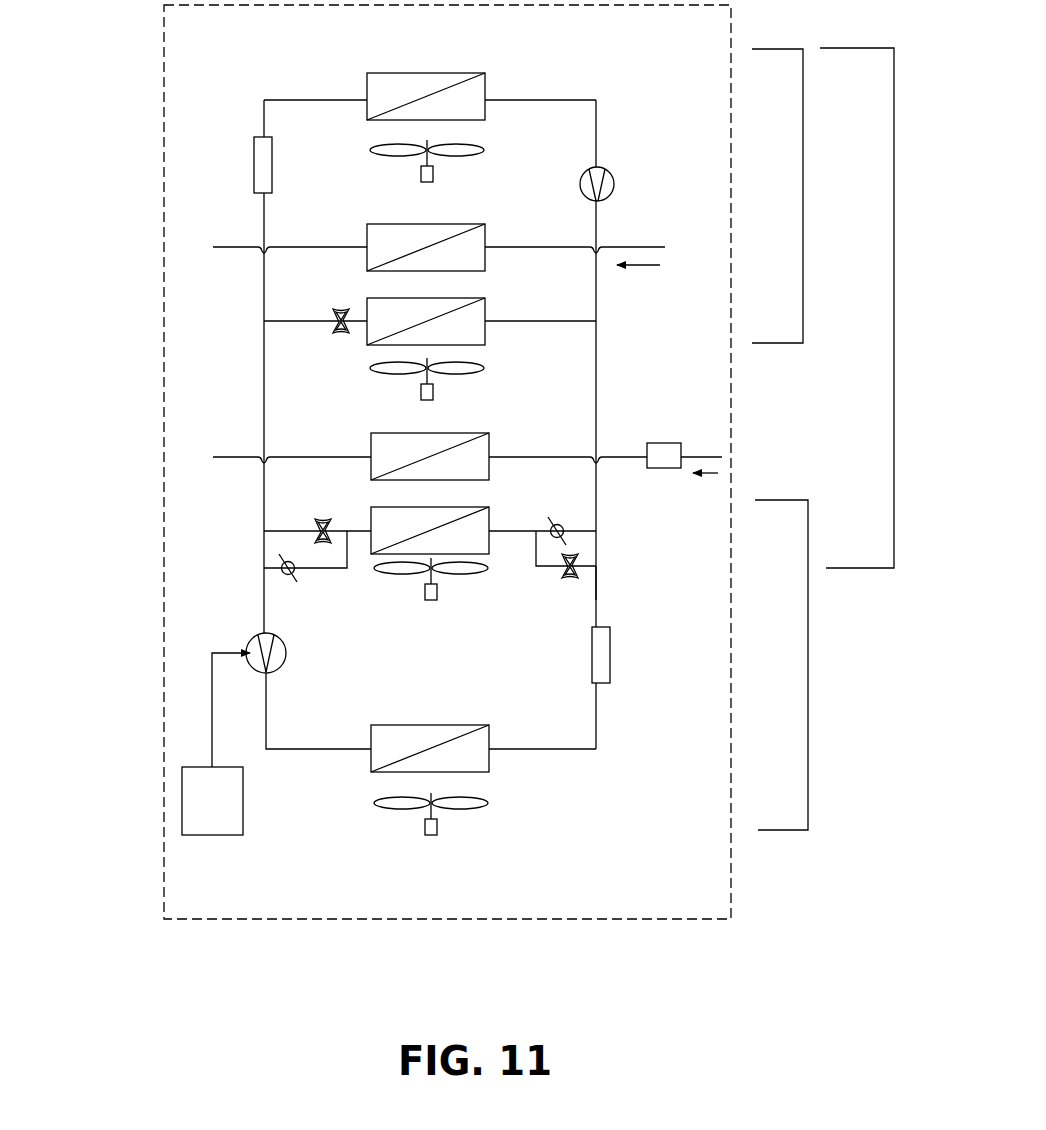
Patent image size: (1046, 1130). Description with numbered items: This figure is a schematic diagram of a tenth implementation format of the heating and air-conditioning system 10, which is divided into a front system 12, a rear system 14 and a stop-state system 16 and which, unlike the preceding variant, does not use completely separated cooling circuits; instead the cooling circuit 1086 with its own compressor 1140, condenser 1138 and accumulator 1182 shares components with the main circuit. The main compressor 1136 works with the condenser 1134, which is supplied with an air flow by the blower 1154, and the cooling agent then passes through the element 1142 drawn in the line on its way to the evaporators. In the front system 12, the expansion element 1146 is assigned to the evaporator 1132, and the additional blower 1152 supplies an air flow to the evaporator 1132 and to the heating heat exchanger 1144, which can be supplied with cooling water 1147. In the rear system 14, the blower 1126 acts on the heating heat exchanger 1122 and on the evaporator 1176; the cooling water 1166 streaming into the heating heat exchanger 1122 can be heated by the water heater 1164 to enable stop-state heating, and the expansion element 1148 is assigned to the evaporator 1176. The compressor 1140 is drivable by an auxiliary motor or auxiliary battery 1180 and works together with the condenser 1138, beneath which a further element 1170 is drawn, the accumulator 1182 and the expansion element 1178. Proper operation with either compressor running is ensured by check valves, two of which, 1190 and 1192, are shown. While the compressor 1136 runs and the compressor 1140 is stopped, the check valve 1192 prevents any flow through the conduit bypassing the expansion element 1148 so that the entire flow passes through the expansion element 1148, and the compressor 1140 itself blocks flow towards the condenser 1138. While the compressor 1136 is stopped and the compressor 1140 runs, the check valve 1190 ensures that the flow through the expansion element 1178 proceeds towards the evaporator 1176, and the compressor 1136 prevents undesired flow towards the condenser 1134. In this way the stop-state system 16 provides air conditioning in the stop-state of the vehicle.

The heating and air-conditioning system 10 is at (122, 98).
The front system 12 is at (803, 258).
The rear system 14 is at (894, 543).
The stop-state system 16 is at (808, 763).
The cooling circuit 1086 is at (597, 586).
The heating heat exchanger of the rear system 1122 is at (489, 447).
The blower 1126 is at (437, 590).
The evaporator 1132 is at (485, 313).
The condenser 1134 is at (437, 73).
The compressor 1136 is at (613, 179).
The condenser 1138 is at (490, 725).
The compressor 1140 is at (287, 654).
The accumulator 1142 is at (254, 165).
The heating heat exchanger of the front system 1144 is at (388, 224).
The expansion element 1146 is at (341, 336).
The cooling water 1147 is at (646, 266).
The expansion element 1148 is at (323, 518).
The additional blower 1152 is at (433, 392).
The blower 1154 is at (433, 174).
The water heater 1164 is at (660, 443).
The cooling water 1166 is at (710, 475).
The fan 1170 is at (438, 826).
The evaporator 1176 is at (489, 523).
The expansion element 1178 is at (570, 581).
The auxiliary motor or auxiliary battery 1180 is at (227, 836).
The accumulator 1182 is at (610, 660).
The check valve 1190 is at (560, 524).
The check valve 1192 is at (296, 576).